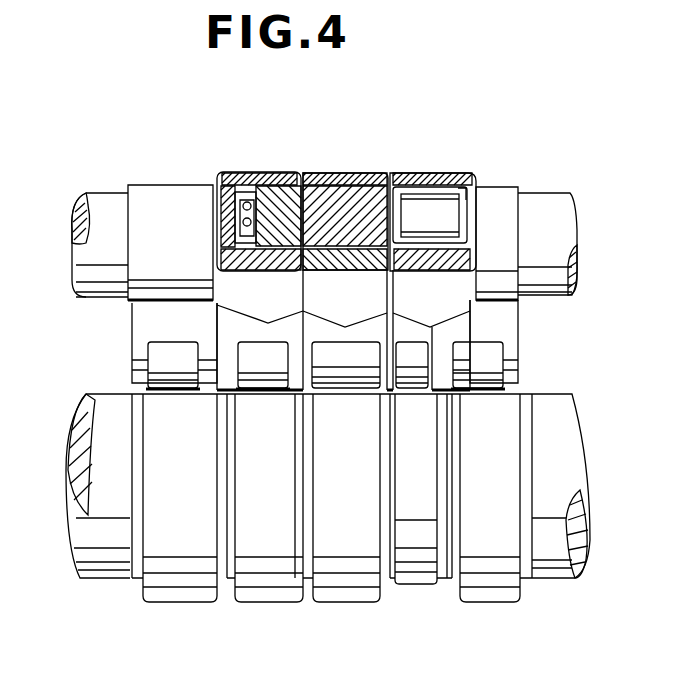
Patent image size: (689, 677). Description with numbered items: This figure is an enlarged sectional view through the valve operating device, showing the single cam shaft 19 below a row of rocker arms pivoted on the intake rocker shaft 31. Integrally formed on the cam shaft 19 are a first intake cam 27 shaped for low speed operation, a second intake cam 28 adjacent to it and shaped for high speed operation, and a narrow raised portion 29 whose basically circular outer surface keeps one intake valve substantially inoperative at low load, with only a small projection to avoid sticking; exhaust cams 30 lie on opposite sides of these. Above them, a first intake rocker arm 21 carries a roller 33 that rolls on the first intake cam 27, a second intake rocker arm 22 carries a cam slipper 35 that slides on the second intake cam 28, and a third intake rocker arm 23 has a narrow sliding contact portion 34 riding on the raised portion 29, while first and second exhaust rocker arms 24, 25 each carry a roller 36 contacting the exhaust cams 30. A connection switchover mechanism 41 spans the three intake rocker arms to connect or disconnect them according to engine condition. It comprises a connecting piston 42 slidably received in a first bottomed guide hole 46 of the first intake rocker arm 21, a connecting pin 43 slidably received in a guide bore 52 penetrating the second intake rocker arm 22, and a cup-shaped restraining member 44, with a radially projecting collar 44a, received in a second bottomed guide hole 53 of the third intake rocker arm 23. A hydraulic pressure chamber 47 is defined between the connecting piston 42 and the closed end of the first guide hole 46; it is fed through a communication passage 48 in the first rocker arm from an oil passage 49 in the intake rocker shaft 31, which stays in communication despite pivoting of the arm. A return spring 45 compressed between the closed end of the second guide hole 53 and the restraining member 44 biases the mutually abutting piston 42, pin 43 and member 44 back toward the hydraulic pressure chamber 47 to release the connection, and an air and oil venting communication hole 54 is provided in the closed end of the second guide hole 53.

The cam shaft 19 is at (578, 445).
The first intake rocker arm 21 is at (230, 173).
The second intake rocker arm 22 is at (372, 173).
The third intake rocker arm 23 is at (448, 173).
The first exhaust rocker arm 24 is at (132, 331).
The second exhaust rocker arm 25 is at (510, 331).
The first intake cam 27 is at (269, 498).
The second intake cam 28 is at (351, 498).
The raised portion 29 is at (423, 489).
The exhaust cam 30 is at (332, 498).
The intake rocker shaft 31 is at (100, 197).
The roller 33 is at (264, 389).
The sliding contact portion 34 is at (412, 389).
The cam slipper 35 is at (344, 389).
The roller 36 is at (178, 389).
The connection switchover mechanism 41 is at (313, 172).
The connecting piston 42 is at (272, 188).
The connecting pin 43 is at (340, 186).
The restraining member 44 is at (410, 187).
The collar 44a is at (430, 326).
The return spring 45 is at (470, 240).
The first bottomed guide hole 46 is at (266, 322).
The hydraulic pressure chamber 47 is at (221, 247).
The communication passage 48 is at (236, 212).
The oil passage 49 is at (70, 225).
The guide bore 52 is at (345, 326).
The second bottomed guide hole 53 is at (518, 288).
The communication hole 54 is at (468, 210).